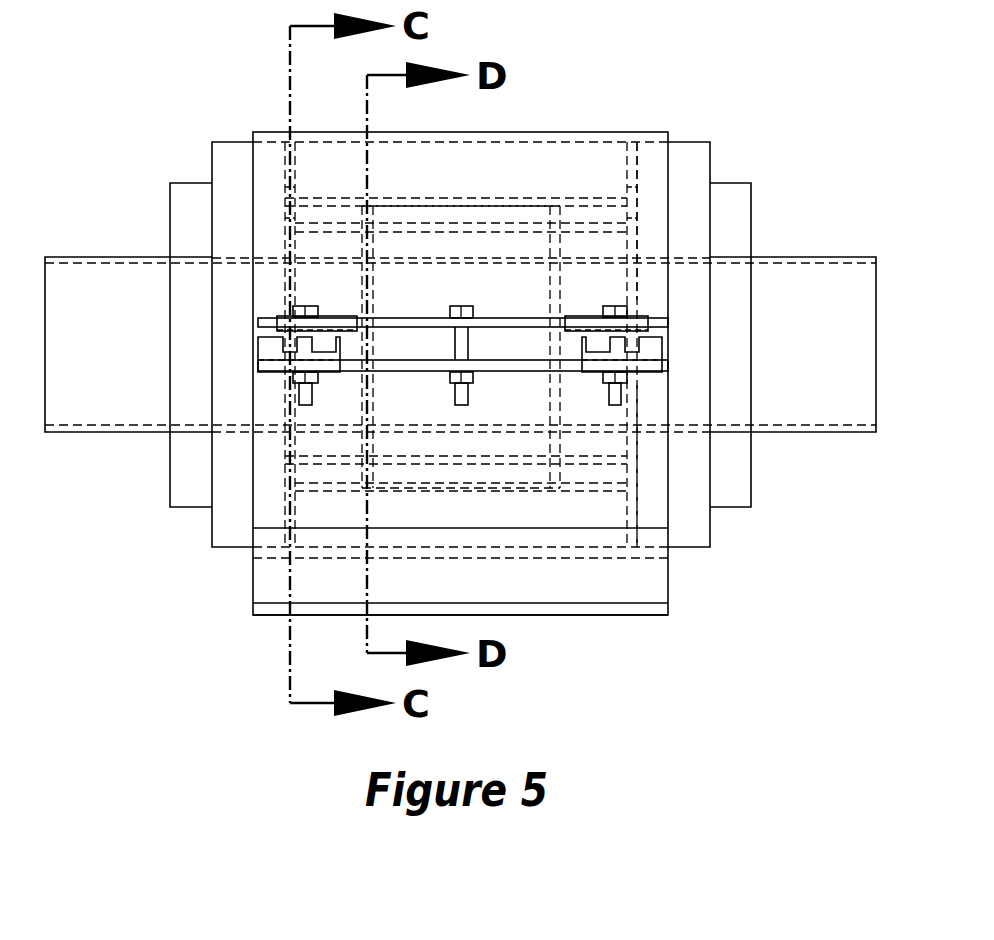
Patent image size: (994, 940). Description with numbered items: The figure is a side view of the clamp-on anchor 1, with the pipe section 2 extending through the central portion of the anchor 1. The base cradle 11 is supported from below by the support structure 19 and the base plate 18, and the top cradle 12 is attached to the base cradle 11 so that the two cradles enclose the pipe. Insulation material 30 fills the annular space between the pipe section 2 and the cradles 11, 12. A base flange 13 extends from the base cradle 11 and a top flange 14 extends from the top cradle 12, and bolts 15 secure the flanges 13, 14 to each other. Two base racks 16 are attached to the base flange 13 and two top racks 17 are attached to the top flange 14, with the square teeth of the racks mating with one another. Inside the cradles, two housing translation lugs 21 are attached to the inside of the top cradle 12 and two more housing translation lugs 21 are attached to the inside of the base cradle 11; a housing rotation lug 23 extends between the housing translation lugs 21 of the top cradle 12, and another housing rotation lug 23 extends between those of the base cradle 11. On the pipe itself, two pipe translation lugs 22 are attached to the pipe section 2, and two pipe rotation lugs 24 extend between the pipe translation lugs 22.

The anchor 1 is at (684, 92).
The pipe section 2 is at (830, 257).
The base cradle 11 is at (652, 507).
The top cradle 12 is at (653, 157).
The base flange 13 is at (666, 362).
The top flange 14 is at (657, 325).
The bolts 15 is at (463, 343).
The base racks 16 is at (265, 347).
The top racks 17 is at (283, 328).
The base plate 18 is at (643, 609).
The support structure 19 is at (658, 587).
The housing translation lugs 21 is at (287, 185).
The pipe translation lugs 22 is at (557, 395).
The housing rotation lug 23 is at (580, 214).
The pipe rotation lugs 24 is at (418, 243).
The insulation material 30 is at (692, 171).